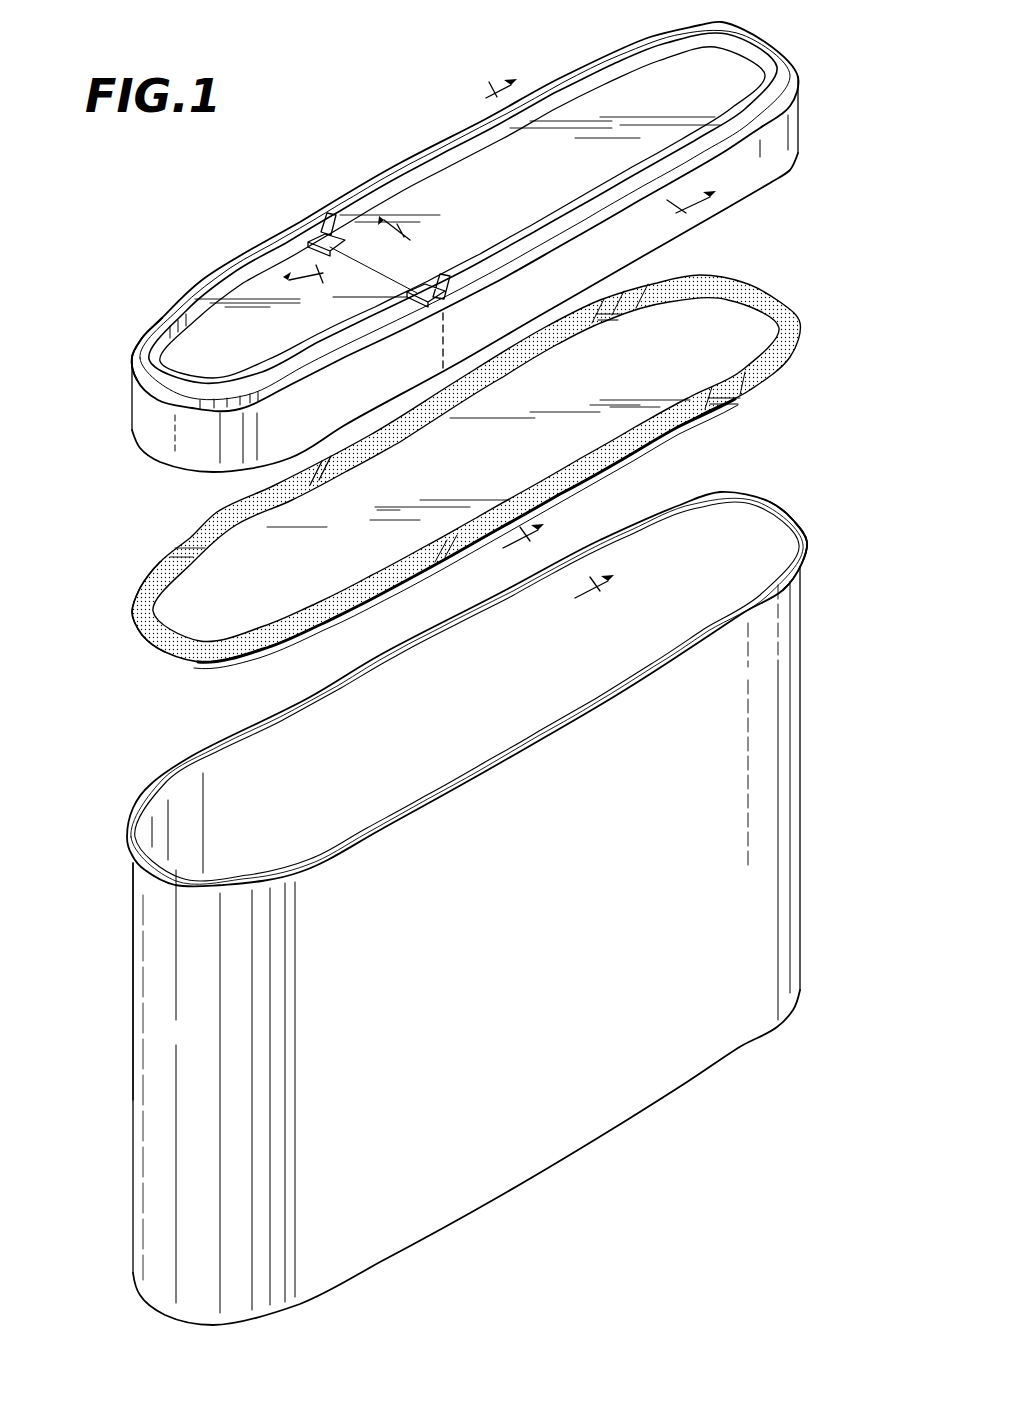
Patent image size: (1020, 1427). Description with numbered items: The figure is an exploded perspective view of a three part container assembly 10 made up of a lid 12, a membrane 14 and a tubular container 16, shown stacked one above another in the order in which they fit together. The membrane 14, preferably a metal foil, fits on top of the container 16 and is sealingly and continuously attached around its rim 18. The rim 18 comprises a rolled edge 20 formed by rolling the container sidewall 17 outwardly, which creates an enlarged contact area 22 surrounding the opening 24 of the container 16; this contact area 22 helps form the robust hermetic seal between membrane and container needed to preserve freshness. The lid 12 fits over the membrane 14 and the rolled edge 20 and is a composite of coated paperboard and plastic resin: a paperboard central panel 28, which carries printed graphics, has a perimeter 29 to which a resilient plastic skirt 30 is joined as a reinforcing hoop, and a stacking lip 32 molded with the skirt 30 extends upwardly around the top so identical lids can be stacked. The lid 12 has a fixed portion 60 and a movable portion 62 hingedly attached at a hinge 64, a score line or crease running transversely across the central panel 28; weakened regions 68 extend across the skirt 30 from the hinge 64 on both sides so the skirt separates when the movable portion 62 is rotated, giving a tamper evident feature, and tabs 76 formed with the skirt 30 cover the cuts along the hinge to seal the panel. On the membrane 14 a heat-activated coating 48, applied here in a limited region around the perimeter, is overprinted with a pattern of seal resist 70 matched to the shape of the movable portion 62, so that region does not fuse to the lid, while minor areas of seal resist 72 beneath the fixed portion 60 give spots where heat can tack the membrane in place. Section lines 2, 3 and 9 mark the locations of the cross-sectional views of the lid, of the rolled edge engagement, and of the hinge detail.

The container assembly 10 is at (163, 261).
The lid 12 is at (155, 440).
The membrane 14 is at (500, 480).
The tubular container 16 is at (500, 964).
The container sidewall 17 is at (742, 745).
The rim 18 is at (775, 500).
The rolled edge 20 is at (805, 555).
The contact area 22 is at (563, 547).
The opening 24 is at (240, 790).
The central panel 28 is at (497, 217).
The perimeter 29 is at (604, 84).
The skirt 30 is at (780, 150).
The stacking lip 32 is at (770, 57).
The coating 48 is at (320, 473).
The fixed portion 60 is at (780, 95).
The movable portion 62 is at (145, 323).
The hinge 64 is at (405, 285).
The weakened regions 68 is at (450, 335).
The seal resist 70 is at (157, 580).
The minor areas of seal resist 72 is at (597, 323).
The tabs 76 is at (320, 243).
The section line 2- 2 is at (591, 154).
The section line 3- 3 is at (549, 569).
The section line 9- 9 is at (355, 265).